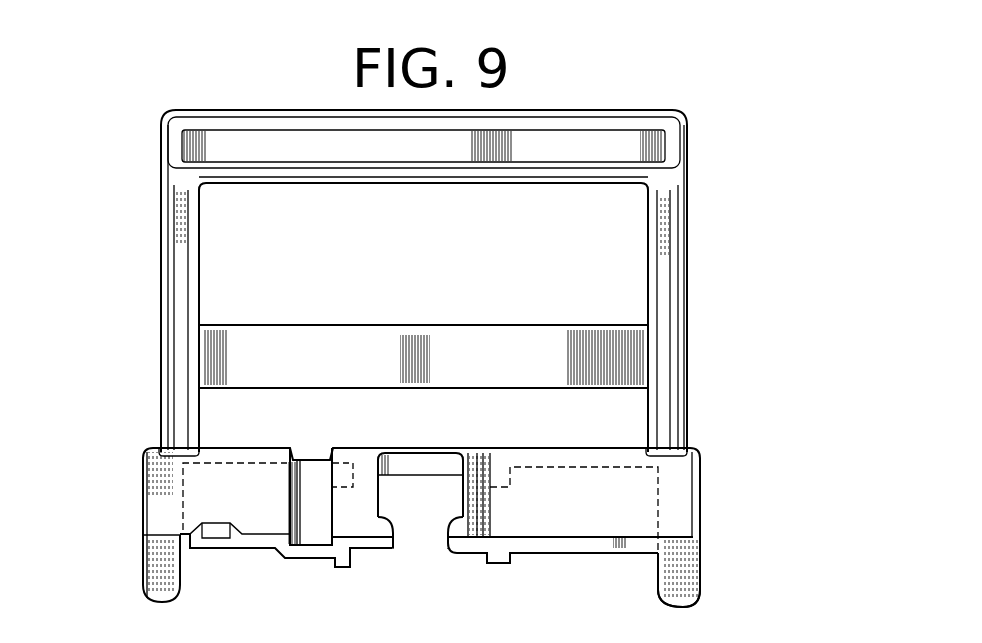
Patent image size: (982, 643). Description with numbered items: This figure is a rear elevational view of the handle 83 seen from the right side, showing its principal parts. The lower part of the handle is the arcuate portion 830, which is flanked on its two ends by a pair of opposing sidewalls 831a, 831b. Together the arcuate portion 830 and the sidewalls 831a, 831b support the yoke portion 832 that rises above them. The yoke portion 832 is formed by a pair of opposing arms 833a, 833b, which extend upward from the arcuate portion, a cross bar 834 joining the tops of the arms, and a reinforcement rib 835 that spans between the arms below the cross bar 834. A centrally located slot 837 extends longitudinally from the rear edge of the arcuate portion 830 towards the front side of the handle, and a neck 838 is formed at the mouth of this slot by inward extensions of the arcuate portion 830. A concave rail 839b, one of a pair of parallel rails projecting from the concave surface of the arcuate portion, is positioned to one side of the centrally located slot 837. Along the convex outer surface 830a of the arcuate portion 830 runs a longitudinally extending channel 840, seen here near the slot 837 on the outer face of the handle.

The handle 83 is at (752, 126).
The yoke portion 832 is at (690, 264).
The opposing arm 833a is at (182, 335).
The opposing arm 833b is at (663, 353).
The cross bar 834 is at (426, 159).
The reinforcement rib 835 is at (504, 369).
The arcuate portion 830 is at (546, 546).
The convex outer surface 830a is at (278, 511).
The sidewall 831a is at (142, 507).
The sidewall 831b is at (702, 488).
The centrally located slot 837 is at (447, 509).
The neck 838 is at (418, 532).
The concave rail 839b is at (510, 477).
The longitudinally extending channel 840 is at (313, 476).